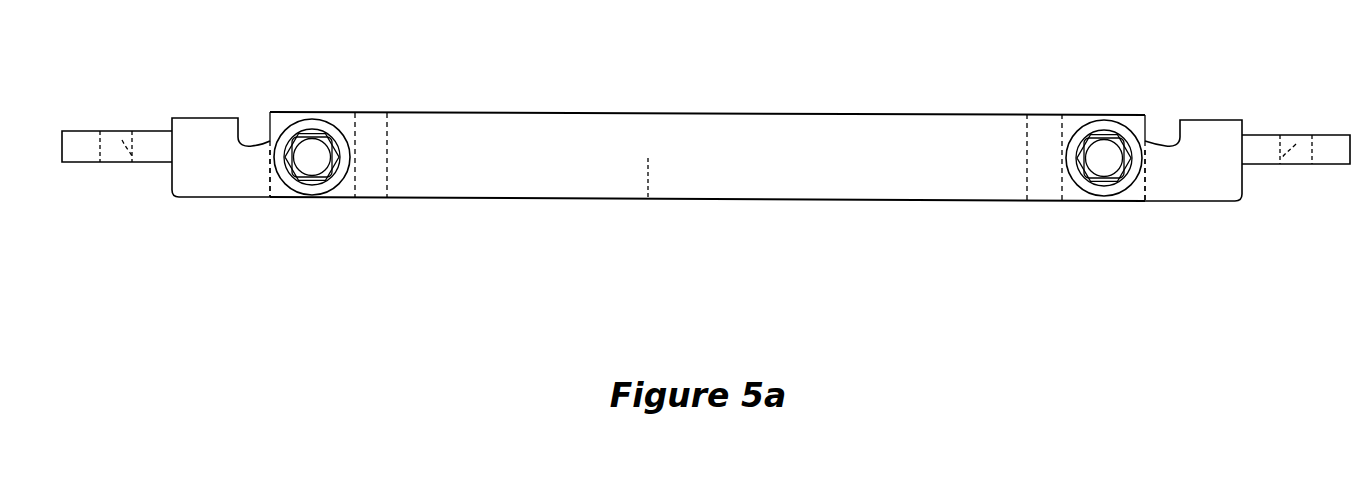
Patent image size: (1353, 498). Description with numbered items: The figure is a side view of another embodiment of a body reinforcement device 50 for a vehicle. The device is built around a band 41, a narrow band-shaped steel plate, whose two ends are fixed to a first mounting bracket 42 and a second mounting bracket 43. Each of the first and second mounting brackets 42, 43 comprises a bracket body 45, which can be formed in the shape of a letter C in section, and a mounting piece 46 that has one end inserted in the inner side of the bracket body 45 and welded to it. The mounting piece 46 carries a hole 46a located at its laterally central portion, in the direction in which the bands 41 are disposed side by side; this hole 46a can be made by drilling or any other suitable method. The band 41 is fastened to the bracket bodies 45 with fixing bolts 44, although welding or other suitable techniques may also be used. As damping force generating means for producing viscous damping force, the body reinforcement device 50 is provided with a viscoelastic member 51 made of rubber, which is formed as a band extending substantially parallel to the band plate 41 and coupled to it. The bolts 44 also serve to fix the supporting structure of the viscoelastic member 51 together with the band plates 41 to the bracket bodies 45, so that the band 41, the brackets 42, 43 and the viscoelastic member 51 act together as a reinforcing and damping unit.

The body reinforcement device 50 is at (706, 148).
The band 41 is at (942, 140).
The first mounting bracket 42 is at (1213, 201).
The second mounting bracket 43 is at (200, 197).
The fixing bolt 44 is at (311, 150).
The bracket body 45 is at (250, 180).
The mounting piece 46 is at (88, 158).
The hole 46a is at (122, 145).
The viscoelastic member 51 is at (650, 162).